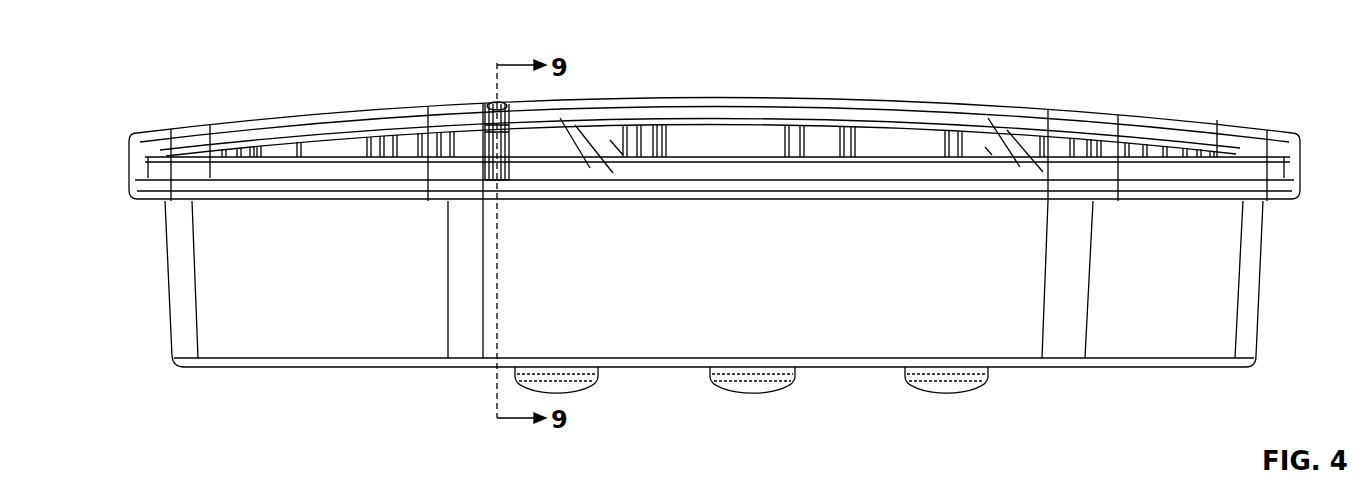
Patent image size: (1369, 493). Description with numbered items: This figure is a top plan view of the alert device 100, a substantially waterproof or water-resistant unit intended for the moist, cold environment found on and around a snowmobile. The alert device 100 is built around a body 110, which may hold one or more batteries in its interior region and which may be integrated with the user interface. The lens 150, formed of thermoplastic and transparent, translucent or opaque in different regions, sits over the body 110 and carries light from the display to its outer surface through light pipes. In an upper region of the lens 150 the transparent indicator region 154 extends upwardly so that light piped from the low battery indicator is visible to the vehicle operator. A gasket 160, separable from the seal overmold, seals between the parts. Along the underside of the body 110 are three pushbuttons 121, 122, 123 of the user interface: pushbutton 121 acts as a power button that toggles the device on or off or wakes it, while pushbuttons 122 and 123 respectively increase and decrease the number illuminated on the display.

The alert device 100 is at (201, 64).
The body 110 is at (1264, 263).
The pushbutton 121 is at (590, 387).
The pushbutton 122 is at (765, 392).
The pushbutton 123 is at (948, 395).
The lens 150 is at (1141, 116).
The indicator region 154 is at (492, 100).
The gasket 160 is at (720, 157).